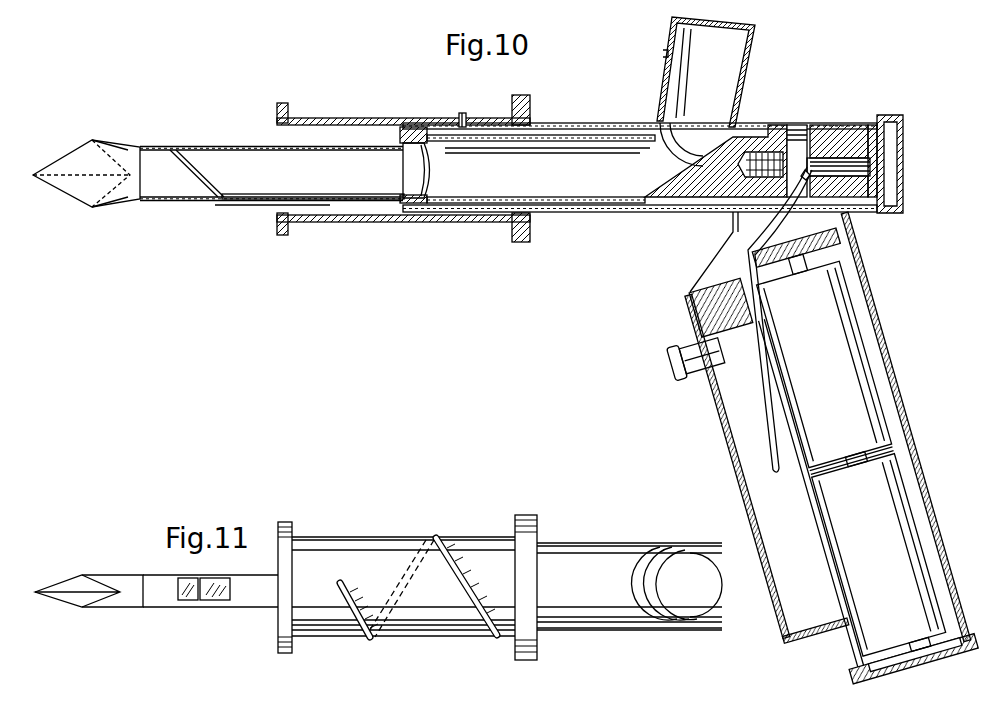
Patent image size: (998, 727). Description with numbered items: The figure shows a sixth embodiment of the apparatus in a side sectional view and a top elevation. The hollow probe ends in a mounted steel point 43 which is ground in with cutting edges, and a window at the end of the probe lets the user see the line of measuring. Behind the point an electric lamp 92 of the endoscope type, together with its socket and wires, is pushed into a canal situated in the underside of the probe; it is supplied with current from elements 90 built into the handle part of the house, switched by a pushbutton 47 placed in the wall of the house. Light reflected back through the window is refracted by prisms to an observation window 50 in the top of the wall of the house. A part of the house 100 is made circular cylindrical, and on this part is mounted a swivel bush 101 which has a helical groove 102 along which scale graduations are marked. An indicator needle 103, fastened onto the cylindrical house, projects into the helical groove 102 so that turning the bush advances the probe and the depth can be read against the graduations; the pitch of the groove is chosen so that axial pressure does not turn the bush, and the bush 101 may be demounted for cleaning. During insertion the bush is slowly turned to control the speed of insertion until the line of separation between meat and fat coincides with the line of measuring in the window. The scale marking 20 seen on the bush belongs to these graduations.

In FIG. 10, the steel point 43 is at (74, 158).
In FIG. 11, the steel point 43 is at (90, 604).
In FIG. 10, the electric lamp 92 is at (234, 196).
In FIG. 10, the indicator needle 103 is at (462, 113).
In FIG. 11, the indicator needle 103 is at (464, 588).
In FIG. 10, the pushbutton 47 is at (696, 357).
In FIG. 10, the elements 90 is at (851, 458).
In FIG. 11, the swivel bush 101 is at (348, 550).
In FIG. 11, the helical groove 102 is at (437, 538).
In FIG. 11, the observation window 50 is at (350, 586).
In FIG. 11, the graduated scale 20 is at (470, 584).
In FIG. 11, the house 100 is at (602, 555).